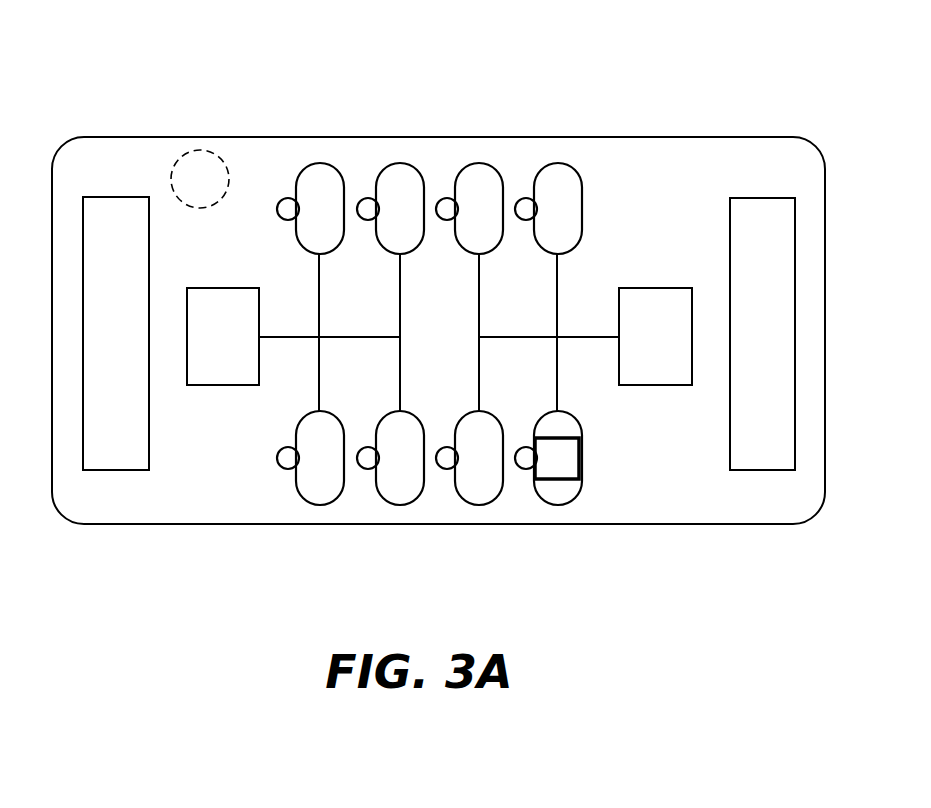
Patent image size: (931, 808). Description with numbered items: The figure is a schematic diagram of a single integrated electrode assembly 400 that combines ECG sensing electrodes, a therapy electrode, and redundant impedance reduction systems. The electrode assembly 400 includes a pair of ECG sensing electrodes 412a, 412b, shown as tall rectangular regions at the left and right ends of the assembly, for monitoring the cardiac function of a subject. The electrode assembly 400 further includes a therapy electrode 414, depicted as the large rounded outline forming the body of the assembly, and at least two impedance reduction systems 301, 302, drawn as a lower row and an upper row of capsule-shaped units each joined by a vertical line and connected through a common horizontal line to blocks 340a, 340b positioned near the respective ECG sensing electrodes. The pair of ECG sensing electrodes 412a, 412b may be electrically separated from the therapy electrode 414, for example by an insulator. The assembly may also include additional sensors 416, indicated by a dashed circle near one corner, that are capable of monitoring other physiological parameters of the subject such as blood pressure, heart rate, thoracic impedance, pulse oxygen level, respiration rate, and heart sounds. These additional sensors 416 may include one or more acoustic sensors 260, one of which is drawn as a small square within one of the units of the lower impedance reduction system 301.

The electrode assembly 400 is at (303, 94).
The therapy electrode 414 is at (675, 488).
The additional sensors 416 is at (201, 150).
The ECG sensing electrode 412a is at (149, 256).
The ECG sensing electrode 412b is at (730, 232).
The first connector block 340a is at (252, 388).
The second connector block 340b is at (624, 388).
The impedance reduction system 302 is at (469, 115).
The impedance reduction system 301 is at (419, 526).
The acoustic sensor 260 is at (555, 483).